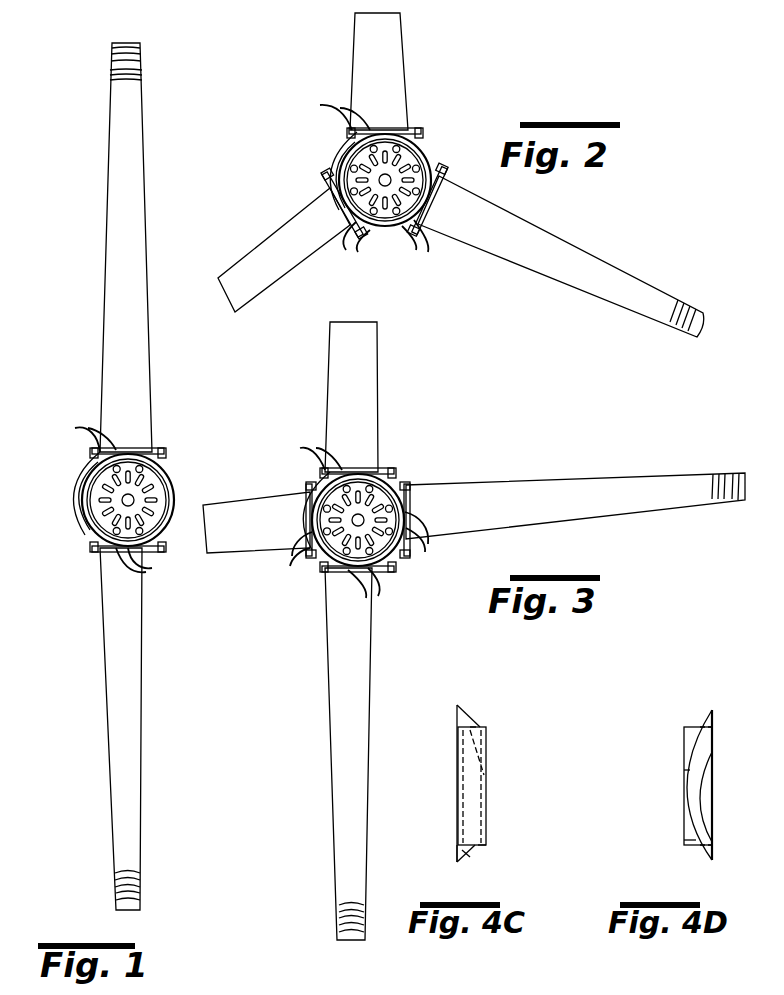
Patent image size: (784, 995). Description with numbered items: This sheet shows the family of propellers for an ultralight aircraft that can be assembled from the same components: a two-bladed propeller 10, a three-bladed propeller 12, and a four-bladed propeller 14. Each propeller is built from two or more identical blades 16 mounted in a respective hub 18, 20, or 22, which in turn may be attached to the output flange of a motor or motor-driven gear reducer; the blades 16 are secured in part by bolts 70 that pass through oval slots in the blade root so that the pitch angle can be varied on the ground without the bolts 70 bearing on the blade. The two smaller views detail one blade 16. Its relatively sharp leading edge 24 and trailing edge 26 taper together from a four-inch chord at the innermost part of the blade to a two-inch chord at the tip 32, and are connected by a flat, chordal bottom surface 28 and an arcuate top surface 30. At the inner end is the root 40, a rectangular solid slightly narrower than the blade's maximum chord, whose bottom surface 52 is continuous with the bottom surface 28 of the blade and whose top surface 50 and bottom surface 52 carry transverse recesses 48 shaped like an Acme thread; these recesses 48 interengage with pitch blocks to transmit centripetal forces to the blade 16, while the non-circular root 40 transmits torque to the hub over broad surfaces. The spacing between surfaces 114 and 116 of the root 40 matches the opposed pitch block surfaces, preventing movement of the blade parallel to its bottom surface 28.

In FIG. 1, the two-bladed propeller 10 is at (96, 318).
In FIG. 2, the three-bladed propeller 12 is at (428, 98).
In FIG. 3, the four-bladed propeller 14 is at (450, 448).
In FIG. 1, the blade 16 is at (102, 362).
In FIG. 2, the blade 16 is at (358, 41).
In FIG. 3, the blade 16 is at (372, 372).
In FIG. 4C, the blade 16 is at (492, 808).
In FIG. 4D, the blade 16 is at (678, 718).
In FIG. 1, the hub 18 is at (174, 478).
In FIG. 2, the hub 20 is at (440, 157).
In FIG. 3, the hub 22 is at (398, 466).
In FIG. 4C, the leading edge 24 is at (457, 862).
In FIG. 4D, the leading edge 24 is at (710, 862).
In FIG. 4C, the trailing edge 26 is at (457, 705).
In FIG. 4D, the trailing edge 26 is at (712, 710).
In FIG. 4C, the bottom surface 28 is at (456, 850).
In FIG. 4C, the top surface 30 is at (468, 854).
In FIG. 4D, the top surface 30 is at (688, 772).
In FIG. 4D, the tip 32 is at (706, 796).
In FIG. 4C, the root 40 is at (490, 728).
In FIG. 4D, the root 40 is at (676, 745).
In FIG. 4C, the recesses 48 is at (482, 747).
In FIG. 4C, the top surface 50 is at (482, 830).
In FIG. 4D, the top surface 50 is at (684, 838).
In FIG. 4C, the bottom surface 52 is at (458, 802).
In FIG. 4D, the bottom surface 52 is at (712, 840).
In FIG. 1, the bolts 70 is at (108, 434).
In FIG. 2, the bolts 70 is at (352, 112).
In FIG. 3, the bolts 70 is at (330, 452).
In FIG. 4C, the surface 114 is at (482, 844).
In FIG. 4C, the surface 116 is at (474, 727).